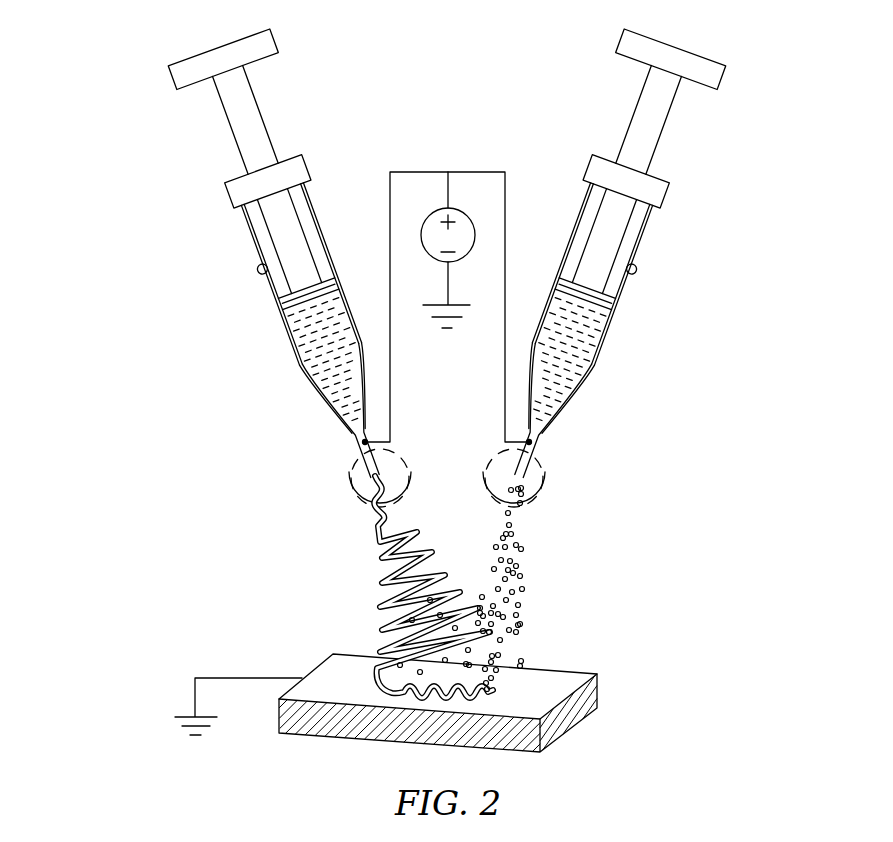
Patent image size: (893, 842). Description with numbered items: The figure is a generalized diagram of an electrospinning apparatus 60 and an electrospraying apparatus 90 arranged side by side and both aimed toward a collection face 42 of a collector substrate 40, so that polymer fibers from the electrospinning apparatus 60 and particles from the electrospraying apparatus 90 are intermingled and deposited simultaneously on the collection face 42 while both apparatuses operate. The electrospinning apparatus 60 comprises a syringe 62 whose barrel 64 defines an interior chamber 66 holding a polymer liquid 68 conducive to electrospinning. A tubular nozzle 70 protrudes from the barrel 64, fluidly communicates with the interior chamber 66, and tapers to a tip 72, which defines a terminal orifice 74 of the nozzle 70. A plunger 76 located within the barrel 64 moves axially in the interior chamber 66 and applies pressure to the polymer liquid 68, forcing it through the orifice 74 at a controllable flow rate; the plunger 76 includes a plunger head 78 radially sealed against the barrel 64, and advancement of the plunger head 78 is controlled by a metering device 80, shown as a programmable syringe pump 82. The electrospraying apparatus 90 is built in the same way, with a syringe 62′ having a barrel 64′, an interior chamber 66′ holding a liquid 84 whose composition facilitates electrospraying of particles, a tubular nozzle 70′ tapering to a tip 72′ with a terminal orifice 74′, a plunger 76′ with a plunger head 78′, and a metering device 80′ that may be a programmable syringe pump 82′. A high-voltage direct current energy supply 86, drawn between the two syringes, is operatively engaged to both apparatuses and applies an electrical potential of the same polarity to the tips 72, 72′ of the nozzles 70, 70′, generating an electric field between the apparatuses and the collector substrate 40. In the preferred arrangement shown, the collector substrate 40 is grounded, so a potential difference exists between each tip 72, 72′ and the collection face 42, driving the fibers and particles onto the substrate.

The electrospinning apparatus 60 is at (243, 268).
The syringe 62 is at (268, 181).
The barrel 64 is at (301, 274).
The interior chamber 66 is at (262, 269).
The polymer liquid 68 is at (334, 363).
The tubular nozzle 70 is at (345, 393).
The tip 72 is at (353, 473).
The terminal orifice 74 is at (408, 472).
The plunger 76 is at (308, 294).
The plunger head 78 is at (352, 415).
The metering device 80 is at (267, 180).
The programmable syringe pump 82 is at (223, 59).
The high-voltage DC energy supply 86 is at (471, 212).
The electrospraying apparatus 90 is at (657, 268).
The syringe 62′ is at (626, 181).
The barrel 64′ is at (592, 274).
The interior chamber 66′ is at (631, 269).
The liquid 84 is at (560, 363).
The tubular nozzle 70′ is at (549, 393).
The tip 72′ is at (541, 473).
The terminal orifice 74′ is at (486, 472).
The plunger 76′ is at (585, 294).
The plunger head 78′ is at (541, 415).
The metering device 80′ is at (626, 180).
The programmable syringe pump 82′ is at (671, 59).
The collector substrate 40 is at (602, 697).
The collection face 42 is at (533, 685).